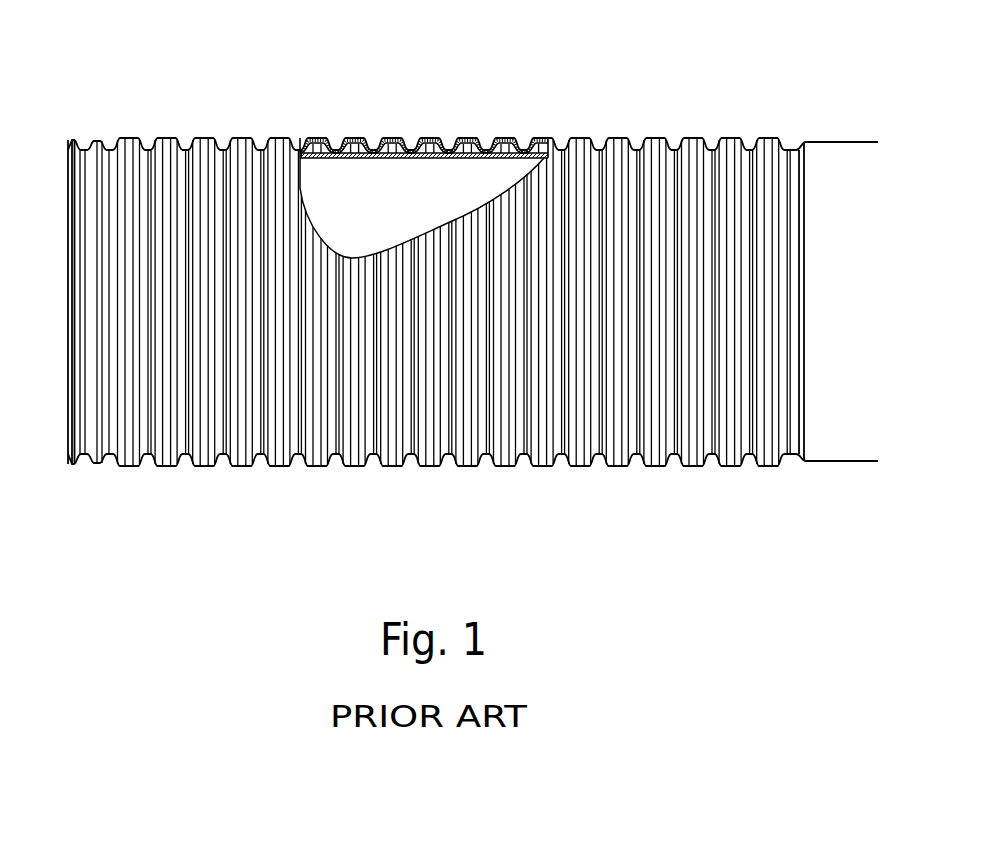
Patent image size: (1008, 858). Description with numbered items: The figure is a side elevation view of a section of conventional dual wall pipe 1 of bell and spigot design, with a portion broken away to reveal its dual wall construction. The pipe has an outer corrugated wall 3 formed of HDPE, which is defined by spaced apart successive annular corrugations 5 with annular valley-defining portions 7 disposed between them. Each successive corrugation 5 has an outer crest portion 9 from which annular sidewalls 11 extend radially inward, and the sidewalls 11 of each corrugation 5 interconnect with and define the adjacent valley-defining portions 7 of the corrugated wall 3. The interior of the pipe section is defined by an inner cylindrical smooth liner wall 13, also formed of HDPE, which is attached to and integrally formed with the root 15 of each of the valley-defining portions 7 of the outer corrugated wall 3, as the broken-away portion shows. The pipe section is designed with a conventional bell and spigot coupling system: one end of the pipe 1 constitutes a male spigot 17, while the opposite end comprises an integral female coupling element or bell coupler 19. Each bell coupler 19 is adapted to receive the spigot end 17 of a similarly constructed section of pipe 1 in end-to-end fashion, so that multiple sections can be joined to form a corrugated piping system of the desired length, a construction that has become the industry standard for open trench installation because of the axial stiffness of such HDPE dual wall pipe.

The dual wall pipe 1 is at (480, 292).
The outer corrugated wall 3 is at (238, 137).
The annular corrugations 5 is at (366, 133).
The valley-defining portions 7 is at (455, 135).
The outer crest portion 9 is at (318, 135).
The annular sidewalls 11 is at (296, 132).
The inner cylindrical smooth liner wall 13 is at (395, 160).
The root 15 is at (412, 160).
The male spigot 17 is at (86, 134).
The bell coupler 19 is at (840, 141).